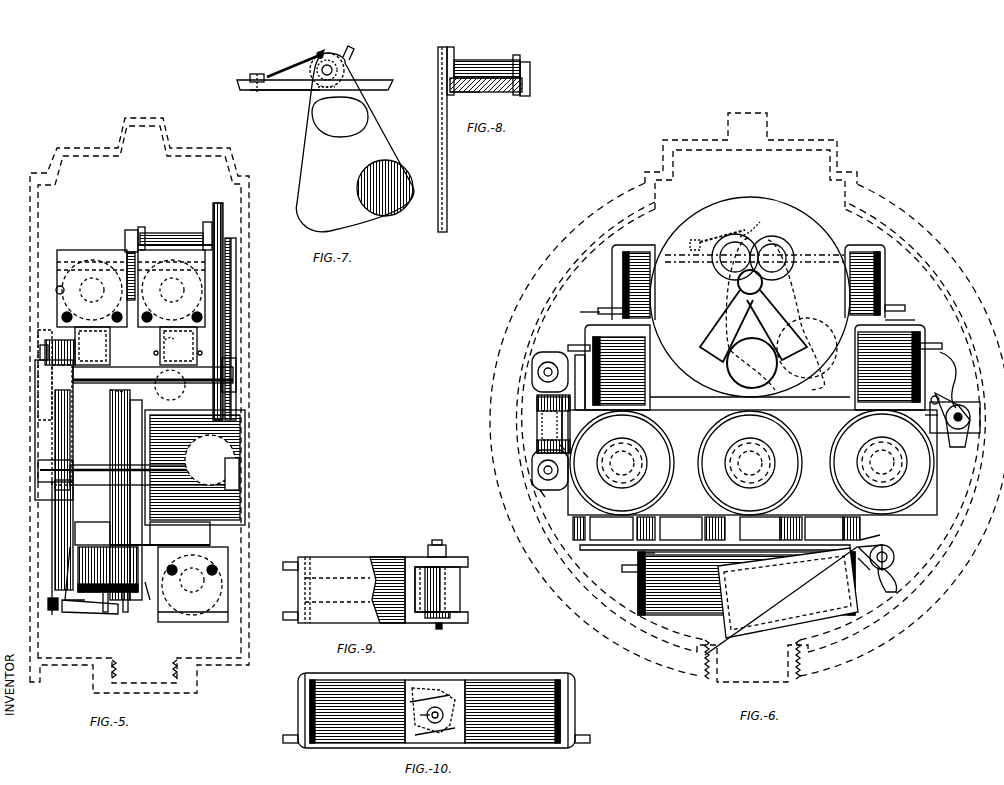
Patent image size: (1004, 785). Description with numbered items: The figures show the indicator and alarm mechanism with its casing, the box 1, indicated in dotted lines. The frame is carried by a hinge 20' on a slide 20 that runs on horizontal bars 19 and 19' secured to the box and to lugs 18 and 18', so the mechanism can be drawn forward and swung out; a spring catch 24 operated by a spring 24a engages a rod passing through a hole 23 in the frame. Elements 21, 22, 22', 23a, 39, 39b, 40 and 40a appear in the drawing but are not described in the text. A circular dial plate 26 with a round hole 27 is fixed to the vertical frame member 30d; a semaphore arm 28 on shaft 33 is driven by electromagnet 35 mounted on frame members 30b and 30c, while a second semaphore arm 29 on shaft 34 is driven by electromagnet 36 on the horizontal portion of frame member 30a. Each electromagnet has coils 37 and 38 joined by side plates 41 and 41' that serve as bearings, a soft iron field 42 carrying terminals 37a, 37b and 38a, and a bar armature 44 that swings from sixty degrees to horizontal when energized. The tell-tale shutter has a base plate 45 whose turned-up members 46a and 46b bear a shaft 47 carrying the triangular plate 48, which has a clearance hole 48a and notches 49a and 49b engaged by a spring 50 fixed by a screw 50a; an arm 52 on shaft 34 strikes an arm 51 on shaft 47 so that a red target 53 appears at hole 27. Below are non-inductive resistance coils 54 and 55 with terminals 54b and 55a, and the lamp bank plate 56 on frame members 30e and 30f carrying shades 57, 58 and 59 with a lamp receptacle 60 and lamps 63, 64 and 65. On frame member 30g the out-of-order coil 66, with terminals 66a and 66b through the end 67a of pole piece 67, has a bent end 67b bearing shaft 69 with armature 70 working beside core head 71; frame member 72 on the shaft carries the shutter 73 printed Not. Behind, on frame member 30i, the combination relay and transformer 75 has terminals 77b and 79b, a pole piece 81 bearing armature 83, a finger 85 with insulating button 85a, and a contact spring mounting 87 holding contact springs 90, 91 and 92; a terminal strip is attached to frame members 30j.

In FIG. 5, the box 1 is at (30, 235).
In FIG. 6, the box 1 is at (556, 195).
In FIG. 5, the lug 18 is at (170, 371).
In FIG. 6, the lug 18 is at (566, 373).
In FIG. 5, the lug 18' is at (248, 471).
In FIG. 6, the lug 18' is at (549, 499).
In FIG. 6, the horizontal bar 19 is at (534, 372).
In FIG. 5, the horizontal bar 19' is at (170, 385).
In FIG. 6, the horizontal bar 19' is at (533, 470).
In FIG. 5, the slide 20 is at (37, 430).
In FIG. 6, the slide 20 is at (528, 425).
In FIG. 5, the hinge 20' is at (112, 400).
In FIG. 6, the plate 21 is at (570, 428).
In FIG. 6, the plate 22 is at (553, 424).
In FIG. 6, the plate 22' is at (559, 448).
In FIG. 6, the hole 23 is at (952, 372).
In FIG. 6, the bracket 23a is at (980, 405).
In FIG. 6, the spring catch 24 is at (950, 430).
In FIG. 6, the spring 24a is at (925, 415).
In FIG. 5, the circular dial plate 26 is at (223, 230).
In FIG. 6, the circular dial plate 26 is at (750, 297).
In FIG. 6, the round hole 27 is at (752, 329).
In FIG. 5, the semaphore arm 28 is at (230, 330).
In FIG. 6, the semaphore arm 28 is at (726, 326).
In FIG. 5, the second semaphore arm 29 is at (236, 310).
In FIG. 6, the second semaphore arm 29 is at (777, 325).
In FIG. 5, the frame member 30a is at (92, 436).
In FIG. 6, the frame member 30a is at (573, 528).
In FIG. 6, the frame member 30b is at (912, 320).
In FIG. 5, the frame member 30c is at (178, 346).
In FIG. 6, the frame member 30c is at (580, 308).
In FIG. 5, the vertical frame member 30d is at (218, 200).
In FIG. 6, the vertical frame member 30d is at (750, 396).
In FIG. 5, the frame member 30e is at (180, 533).
In FIG. 6, the frame member 30e is at (681, 528).
In FIG. 6, the frame member 30f is at (832, 528).
In FIG. 6, the frame member 30g is at (611, 528).
In FIG. 5, the frame member 30i is at (144, 594).
In FIG. 6, the frame member 30j is at (771, 528).
In FIG. 5, the shaft 33 is at (171, 288).
In FIG. 5, the shaft 34 is at (68, 286).
In FIG. 9, the shaft 34 is at (440, 629).
In FIG. 5, the electromagnet 35 is at (172, 313).
In FIG. 5, the electromagnet 36 is at (92, 313).
In FIG. 10, the electromagnet 36 is at (580, 710).
In FIG. 9, the coil 37 is at (385, 557).
In FIG. 10, the coil 37 is at (357, 723).
In FIG. 9, the terminal 37a is at (290, 562).
In FIG. 9, the terminal 37b is at (290, 620).
In FIG. 10, the terminal 37b is at (290, 735).
In FIG. 10, the coil 38 is at (512, 723).
In FIG. 10, the terminal 38a is at (588, 735).
In FIG. 6, the solenoid 39 is at (623, 275).
In FIG. 6, the plunger 39b is at (605, 308).
In FIG. 6, the solenoid 40 is at (865, 285).
In FIG. 6, the plunger 40a is at (898, 305).
In FIG. 9, the side plate 41 is at (451, 627).
In FIG. 10, the side plate 41 is at (420, 718).
In FIG. 9, the side plate 41' is at (443, 579).
In FIG. 7, the soft iron field 42 is at (385, 80).
In FIG. 8, the soft iron field 42 is at (490, 92).
In FIG. 9, the soft iron field 42 is at (351, 590).
In FIG. 10, the soft iron field 42 is at (510, 673).
In FIG. 9, the bar armature 44 is at (450, 594).
In FIG. 10, the bar armature 44 is at (425, 690).
In FIG. 7, the plate or mounting 45 is at (283, 90).
In FIG. 8, the plate or mounting 45 is at (462, 92).
In FIG. 5, the vertical member 46a is at (142, 227).
In FIG. 8, the vertical member 46a is at (458, 58).
In FIG. 5, the vertical member 46b is at (205, 222).
In FIG. 8, the vertical member 46b is at (518, 56).
In FIG. 5, the shaft 47 is at (173, 225).
In FIG. 8, the shaft 47 is at (485, 54).
In FIG. 7, the triangular plate 48 is at (355, 139).
In FIG. 8, the triangular plate 48 is at (447, 160).
In FIG. 6, the triangular plate 48 is at (815, 300).
In FIG. 7, the hole 48a is at (340, 117).
In FIG. 6, the hole 48a is at (790, 268).
In FIG. 7, the notch 49a is at (326, 55).
In FIG. 7, the notch 49b is at (318, 52).
In FIG. 7, the spring 50 is at (283, 70).
In FIG. 6, the spring 50 is at (720, 235).
In FIG. 7, the rivet or screw 50a is at (255, 74).
In FIG. 6, the rivet or screw 50a is at (690, 240).
In FIG. 5, the short arm 51 is at (125, 236).
In FIG. 7, the short arm 51 is at (345, 90).
In FIG. 8, the short arm 51 is at (530, 72).
In FIG. 5, the short arm 52 is at (127, 288).
In FIG. 9, the short arm 52 is at (440, 545).
In FIG. 10, the short arm 52 is at (443, 713).
In FIG. 7, the red target 53 is at (357, 190).
In FIG. 6, the red target 53 is at (807, 348).
In FIG. 5, the non-inductive resistance coil 54 is at (178, 330).
In FIG. 6, the non-inductive resistance coil 54 is at (615, 345).
In FIG. 6, the terminal 54b is at (578, 345).
In FIG. 6, the non-inductive resistance coil 55 is at (875, 345).
In FIG. 6, the terminal 55a is at (938, 343).
In FIG. 6, the metal plate 56 is at (752, 462).
In FIG. 5, the metal tube 57 is at (240, 420).
In FIG. 6, the metal tube 57 is at (650, 500).
In FIG. 6, the metal tube 58 is at (790, 500).
In FIG. 6, the metal tube 59 is at (920, 495).
In FIG. 5, the lamp receptacle 60 is at (132, 466).
In FIG. 5, the lamp 63 is at (230, 445).
In FIG. 6, the lamp 63 is at (614, 488).
In FIG. 6, the lamp 64 is at (740, 488).
In FIG. 6, the lamp 65 is at (882, 488).
In FIG. 5, the electromagnet coil 66 is at (200, 622).
In FIG. 6, the electromagnet coil 66 is at (680, 615).
In FIG. 5, the terminal 66a is at (190, 562).
In FIG. 5, the terminal 66b is at (218, 570).
In FIG. 6, the terminal 66b is at (628, 572).
In FIG. 5, the pole piece 67 is at (222, 545).
In FIG. 6, the pole piece 67 is at (715, 552).
In FIG. 6, the end of pole piece 67a is at (638, 552).
In FIG. 6, the bent end 67b is at (878, 538).
In FIG. 6, the shaft 69 is at (896, 580).
In FIG. 6, the armature 70 is at (900, 590).
In FIG. 6, the enlarged core head 71 is at (872, 572).
In FIG. 6, the frame member 72 is at (894, 557).
In FIG. 6, the shutter 73 is at (788, 593).
In FIG. 5, the combination primary relay and transformer 75 is at (118, 558).
In FIG. 5, the terminal 77b is at (108, 612).
In FIG. 5, the terminal 79b is at (126, 612).
In FIG. 5, the pole piece 81 is at (55, 530).
In FIG. 5, the armature 83 is at (90, 614).
In FIG. 5, the finger 85 is at (58, 610).
In FIG. 5, the insulating button 85a is at (38, 482).
In FIG. 5, the contact spring mounting 87 is at (45, 350).
In FIG. 5, the contact spring 90 is at (60, 452).
In FIG. 5, the contact spring 91 is at (60, 420).
In FIG. 5, the contact spring 92 is at (48, 405).